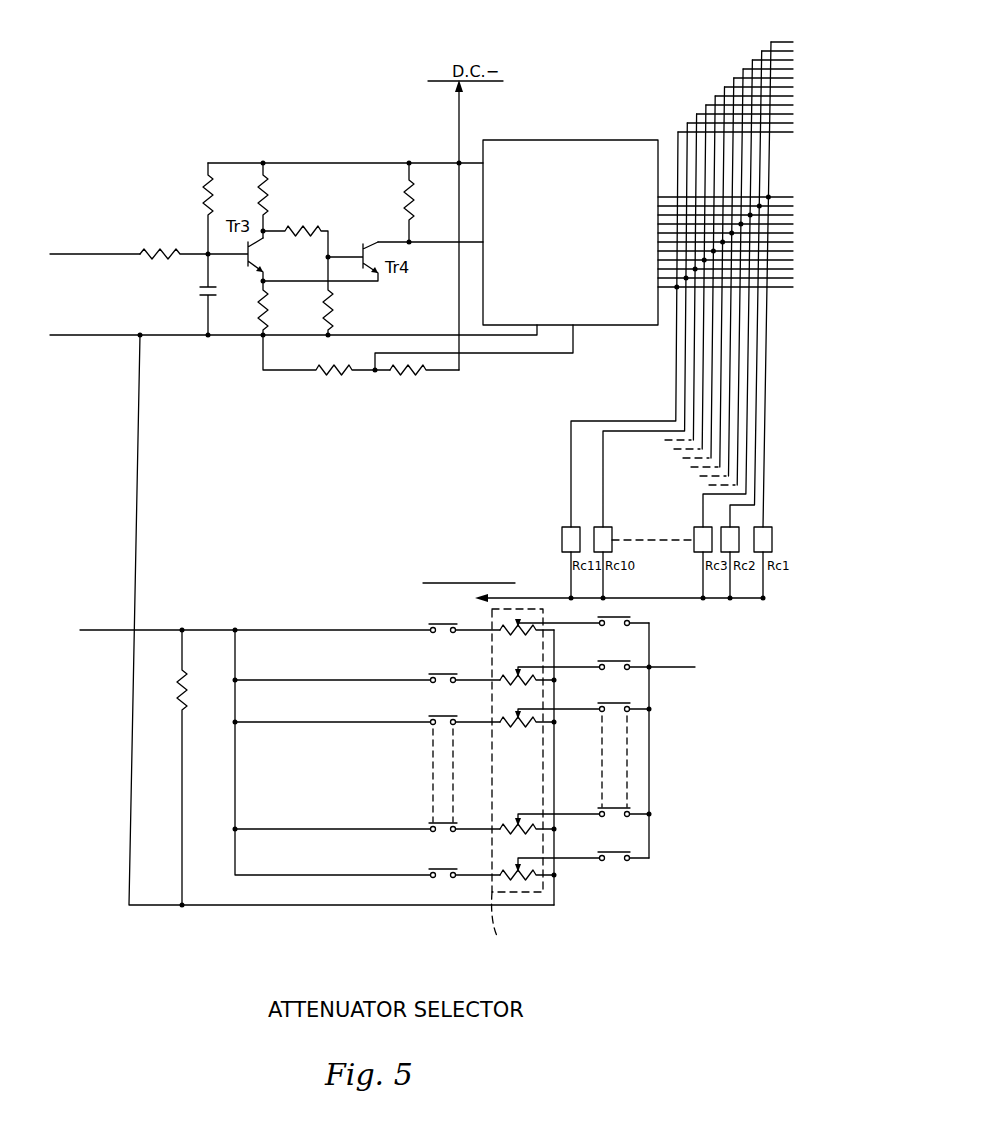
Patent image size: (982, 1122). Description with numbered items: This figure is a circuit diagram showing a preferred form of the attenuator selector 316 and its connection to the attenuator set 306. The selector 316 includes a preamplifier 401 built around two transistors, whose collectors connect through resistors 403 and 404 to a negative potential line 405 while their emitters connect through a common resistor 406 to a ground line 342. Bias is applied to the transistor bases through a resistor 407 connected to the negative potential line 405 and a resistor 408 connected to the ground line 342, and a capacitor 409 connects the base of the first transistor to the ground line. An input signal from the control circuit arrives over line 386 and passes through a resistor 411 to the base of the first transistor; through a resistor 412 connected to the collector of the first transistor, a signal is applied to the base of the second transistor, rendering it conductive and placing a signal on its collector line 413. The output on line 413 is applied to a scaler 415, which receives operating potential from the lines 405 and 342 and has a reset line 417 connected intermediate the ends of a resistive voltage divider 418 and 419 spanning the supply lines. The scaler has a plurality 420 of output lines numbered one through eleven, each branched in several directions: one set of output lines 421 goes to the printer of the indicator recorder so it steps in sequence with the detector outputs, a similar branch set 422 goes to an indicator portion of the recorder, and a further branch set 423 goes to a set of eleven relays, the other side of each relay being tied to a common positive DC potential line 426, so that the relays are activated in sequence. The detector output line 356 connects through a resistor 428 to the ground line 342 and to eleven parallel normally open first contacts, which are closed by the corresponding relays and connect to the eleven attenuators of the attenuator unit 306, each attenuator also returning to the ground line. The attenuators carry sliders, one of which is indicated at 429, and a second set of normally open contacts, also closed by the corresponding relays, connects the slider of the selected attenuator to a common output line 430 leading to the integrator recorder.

The attenuator set 306 is at (625, 917).
The attenuator selector 316 is at (442, 777).
The ground line 342 is at (227, 337).
The detector output line 356 is at (120, 633).
The line 386 is at (118, 254).
The preamplifier 401 is at (269, 148).
The resistor 403 is at (270, 190).
The resistor 404 is at (406, 205).
The negative potential line 405 is at (363, 170).
The common resistor 406 is at (270, 300).
The resistor 407 is at (208, 192).
The resistor 408 is at (333, 306).
The capacitor 409 is at (205, 293).
The resistor 411 is at (159, 265).
The resistor 412 is at (301, 230).
The collector line 413 is at (434, 242).
The scaler 415 is at (559, 142).
The reset line 417 is at (523, 356).
The resistive voltage divider 418 is at (350, 375).
The resistive voltage divider 419 is at (419, 377).
The output lines 420 is at (672, 292).
The set of output lines 421 is at (790, 141).
The branch set of output lines 422 is at (782, 297).
The branch set 423 is at (768, 427).
The positive DC potential line 426 is at (532, 592).
The resistor 428 is at (187, 697).
The slider 429 is at (553, 623).
The common output line 430 is at (674, 662).